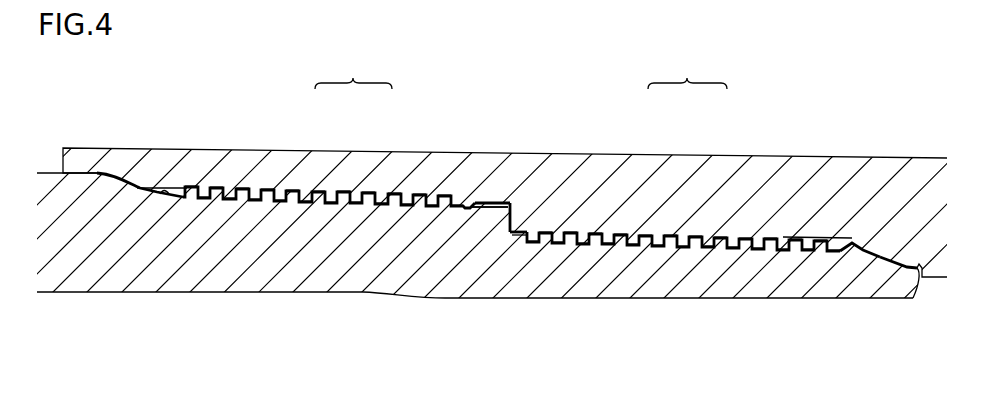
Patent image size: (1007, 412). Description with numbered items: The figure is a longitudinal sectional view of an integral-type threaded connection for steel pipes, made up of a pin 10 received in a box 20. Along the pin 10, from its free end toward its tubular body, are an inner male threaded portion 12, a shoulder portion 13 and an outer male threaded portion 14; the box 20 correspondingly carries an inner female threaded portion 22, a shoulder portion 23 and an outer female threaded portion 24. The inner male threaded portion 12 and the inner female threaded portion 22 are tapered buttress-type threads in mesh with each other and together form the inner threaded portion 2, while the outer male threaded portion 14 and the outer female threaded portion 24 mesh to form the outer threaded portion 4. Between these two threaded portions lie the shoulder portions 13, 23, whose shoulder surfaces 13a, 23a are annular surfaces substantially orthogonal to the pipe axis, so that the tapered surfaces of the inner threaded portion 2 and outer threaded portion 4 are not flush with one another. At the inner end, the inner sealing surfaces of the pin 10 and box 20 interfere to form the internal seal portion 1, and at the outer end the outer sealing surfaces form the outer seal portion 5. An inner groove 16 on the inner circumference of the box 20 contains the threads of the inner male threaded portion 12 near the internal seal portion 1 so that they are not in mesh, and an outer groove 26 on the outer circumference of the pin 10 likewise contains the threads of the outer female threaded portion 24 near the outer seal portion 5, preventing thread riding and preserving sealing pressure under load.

The internal seal portion 1 is at (883, 266).
The inner threaded portion 2 is at (687, 71).
The outer threaded portion 4 is at (353, 70).
The outer seal portion 5 is at (112, 192).
The pin 10 is at (86, 300).
The inner male threaded portion 12 is at (696, 262).
The shoulder portion 13 is at (498, 236).
The shoulder surface 13a is at (524, 240).
The outer male threaded portion 14 is at (361, 214).
The inner groove 16 is at (805, 250).
The box 20 is at (821, 146).
The inner female threaded portion 22 is at (657, 226).
The shoulder portion 23 is at (519, 210).
The shoulder surface 23a is at (504, 200).
The outer female threaded portion 24 is at (327, 183).
The outer groove 26 is at (163, 197).